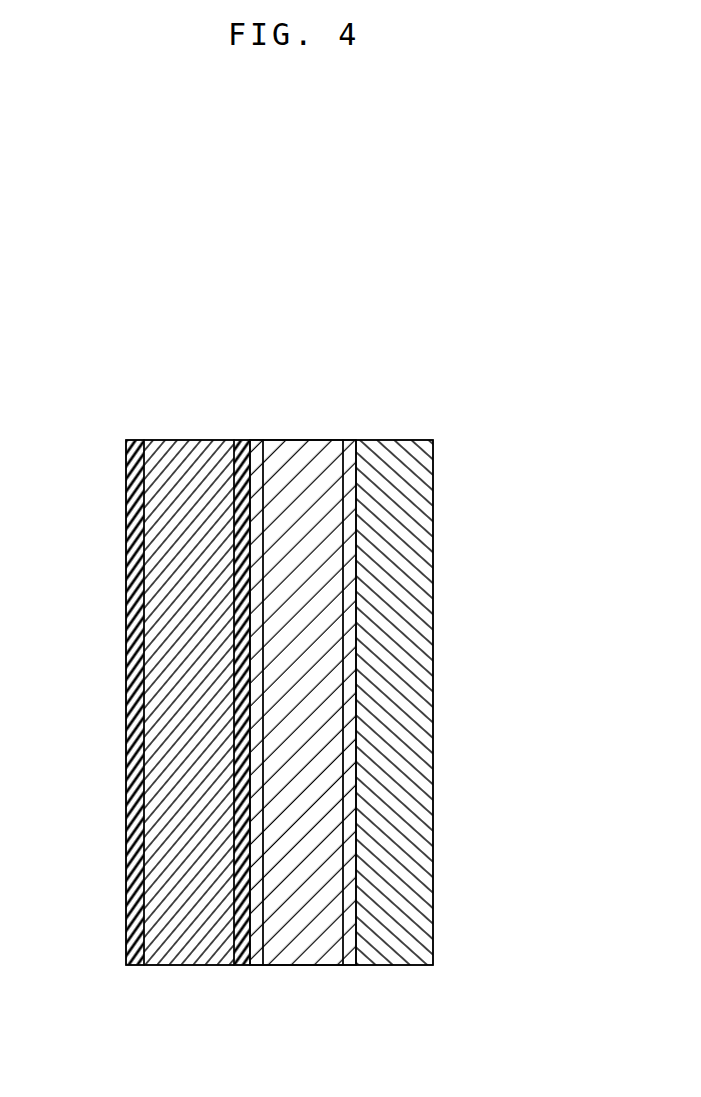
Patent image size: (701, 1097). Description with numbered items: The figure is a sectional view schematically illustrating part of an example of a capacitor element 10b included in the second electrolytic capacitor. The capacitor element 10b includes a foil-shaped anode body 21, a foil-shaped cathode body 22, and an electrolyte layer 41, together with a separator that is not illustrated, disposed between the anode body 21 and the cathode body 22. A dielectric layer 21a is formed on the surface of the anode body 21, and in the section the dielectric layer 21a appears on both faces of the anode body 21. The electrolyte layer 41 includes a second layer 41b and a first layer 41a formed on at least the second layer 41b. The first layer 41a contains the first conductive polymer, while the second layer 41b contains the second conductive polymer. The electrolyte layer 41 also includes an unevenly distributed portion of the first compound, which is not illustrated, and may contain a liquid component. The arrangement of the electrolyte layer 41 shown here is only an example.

The capacitor element 10b is at (85, 362).
The anode body 21 is at (263, 372).
The dielectric layer 21a is at (133, 440).
The electrolyte layer 41 is at (388, 331).
The first layer 41a is at (312, 440).
The second layer 41b is at (343, 440).
The cathode body 22 is at (395, 440).